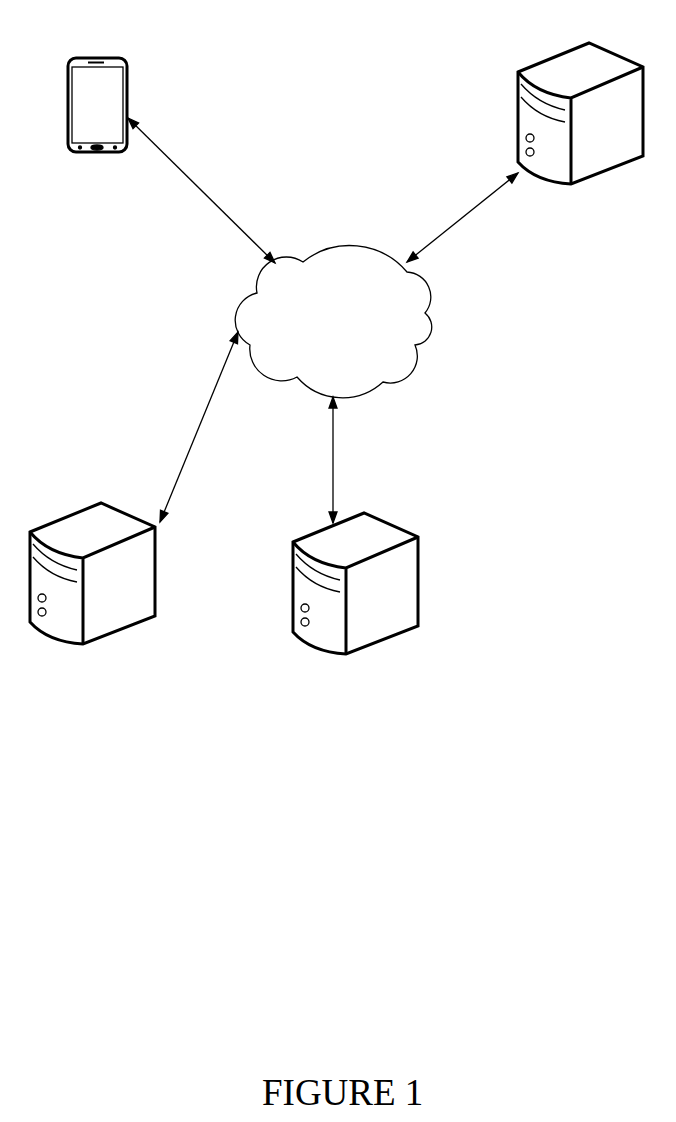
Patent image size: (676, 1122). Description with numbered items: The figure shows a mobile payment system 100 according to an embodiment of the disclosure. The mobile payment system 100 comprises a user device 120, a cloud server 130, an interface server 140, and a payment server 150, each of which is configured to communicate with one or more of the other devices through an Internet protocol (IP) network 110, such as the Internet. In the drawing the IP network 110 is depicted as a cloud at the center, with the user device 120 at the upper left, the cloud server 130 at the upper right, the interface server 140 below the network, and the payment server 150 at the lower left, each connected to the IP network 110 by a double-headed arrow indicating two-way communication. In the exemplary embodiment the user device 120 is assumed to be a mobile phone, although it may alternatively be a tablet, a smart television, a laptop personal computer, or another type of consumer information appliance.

The mobile payment system 100 is at (148, 843).
The IP network 110 is at (427, 321).
The user device 120 is at (90, 58).
The cloud server 130 is at (578, 45).
The interface server 140 is at (418, 625).
The payment server 150 is at (78, 510).